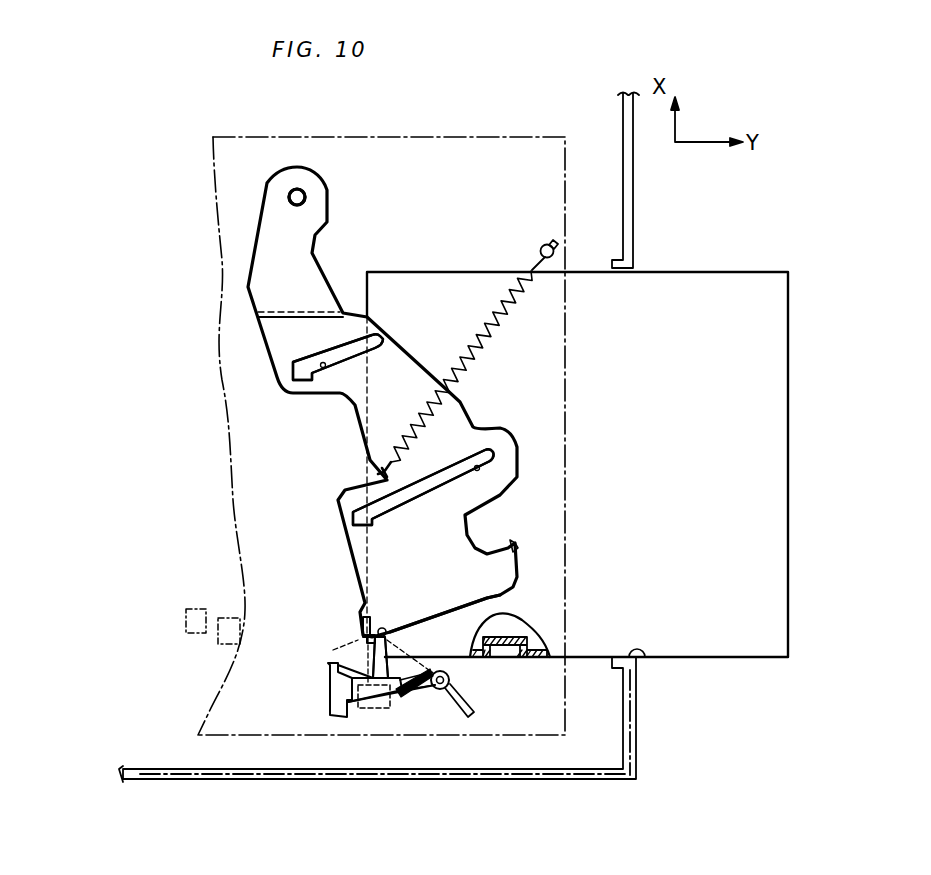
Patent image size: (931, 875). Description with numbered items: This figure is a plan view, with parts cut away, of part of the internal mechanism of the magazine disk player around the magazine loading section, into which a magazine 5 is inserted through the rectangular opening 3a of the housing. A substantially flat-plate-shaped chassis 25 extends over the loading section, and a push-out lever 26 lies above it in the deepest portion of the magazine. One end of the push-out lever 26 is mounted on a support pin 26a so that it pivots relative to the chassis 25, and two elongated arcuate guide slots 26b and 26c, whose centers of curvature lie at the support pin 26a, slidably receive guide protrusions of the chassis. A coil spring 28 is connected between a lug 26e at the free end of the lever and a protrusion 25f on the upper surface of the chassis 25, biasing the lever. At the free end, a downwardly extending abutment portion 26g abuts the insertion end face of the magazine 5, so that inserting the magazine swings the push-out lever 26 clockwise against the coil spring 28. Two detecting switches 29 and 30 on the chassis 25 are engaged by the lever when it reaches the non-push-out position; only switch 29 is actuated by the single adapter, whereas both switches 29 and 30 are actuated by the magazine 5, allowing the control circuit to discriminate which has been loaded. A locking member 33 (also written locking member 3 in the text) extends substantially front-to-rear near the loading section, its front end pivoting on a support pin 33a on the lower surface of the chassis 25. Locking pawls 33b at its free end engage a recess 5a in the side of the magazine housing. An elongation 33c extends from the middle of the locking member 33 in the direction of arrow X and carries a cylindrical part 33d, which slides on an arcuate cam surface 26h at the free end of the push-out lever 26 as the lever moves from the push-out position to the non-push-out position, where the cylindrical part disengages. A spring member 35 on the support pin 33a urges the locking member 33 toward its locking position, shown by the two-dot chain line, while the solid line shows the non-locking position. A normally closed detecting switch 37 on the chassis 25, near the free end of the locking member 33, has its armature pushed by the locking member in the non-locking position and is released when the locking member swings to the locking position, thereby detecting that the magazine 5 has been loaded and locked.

The locking member 3 is at (630, 192).
The rectangular opening 3a is at (646, 660).
The magazine 5 is at (741, 270).
The recess 5a is at (510, 658).
The chassis 25 is at (505, 137).
The protrusion 25f is at (543, 244).
The push-out lever 26 is at (272, 349).
The support pin 26a is at (288, 197).
The guide slot 26b is at (323, 368).
The guide slot 26c is at (478, 471).
The lug 26e is at (380, 471).
The abutment portion 26g is at (365, 615).
The arcuate cam surface 26h is at (497, 603).
The coil spring 28 is at (492, 312).
The detecting switch 29 is at (225, 618).
The detecting switch 30 is at (190, 622).
The locking member 33 is at (355, 705).
The support pin 33a is at (435, 692).
The locking pawls 33b is at (330, 665).
The elongation 33c is at (375, 645).
The cylindrical part 33d is at (378, 630).
The spring member 35 is at (466, 718).
The detecting switch 37 is at (378, 708).